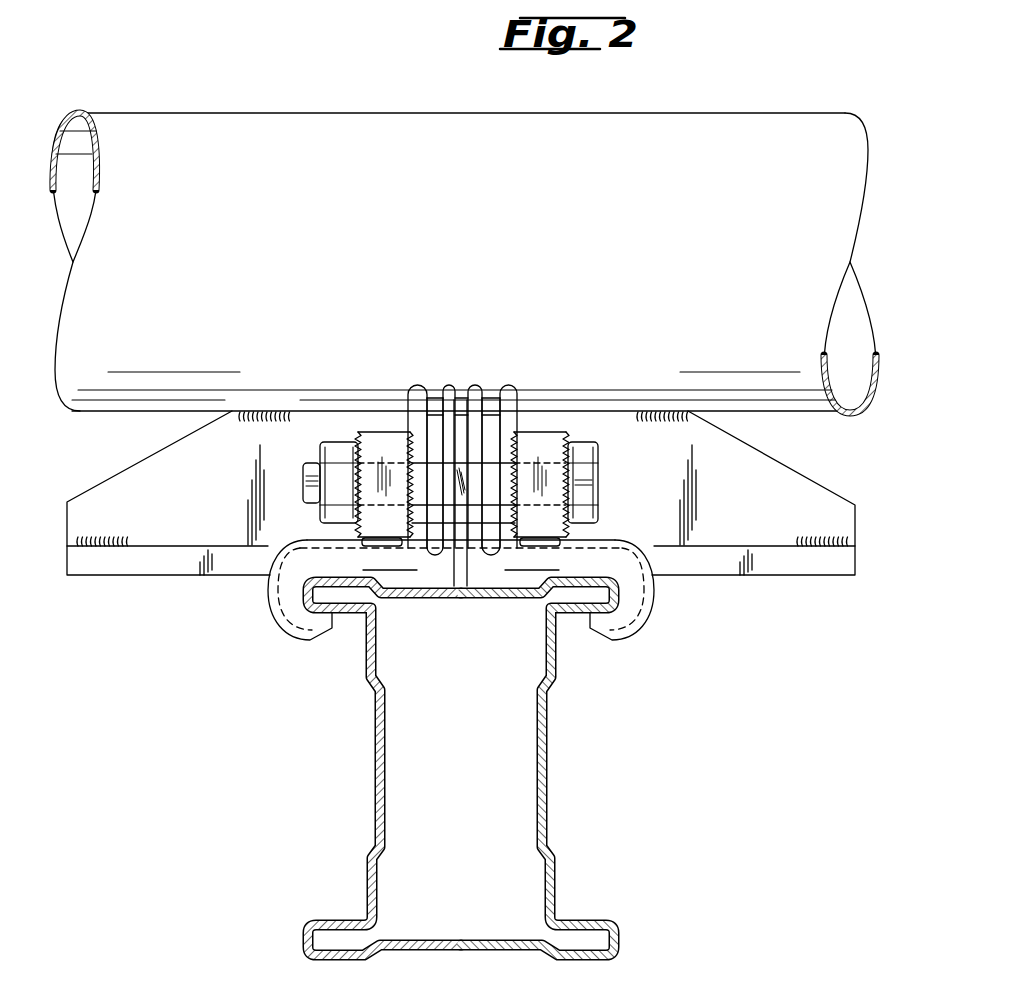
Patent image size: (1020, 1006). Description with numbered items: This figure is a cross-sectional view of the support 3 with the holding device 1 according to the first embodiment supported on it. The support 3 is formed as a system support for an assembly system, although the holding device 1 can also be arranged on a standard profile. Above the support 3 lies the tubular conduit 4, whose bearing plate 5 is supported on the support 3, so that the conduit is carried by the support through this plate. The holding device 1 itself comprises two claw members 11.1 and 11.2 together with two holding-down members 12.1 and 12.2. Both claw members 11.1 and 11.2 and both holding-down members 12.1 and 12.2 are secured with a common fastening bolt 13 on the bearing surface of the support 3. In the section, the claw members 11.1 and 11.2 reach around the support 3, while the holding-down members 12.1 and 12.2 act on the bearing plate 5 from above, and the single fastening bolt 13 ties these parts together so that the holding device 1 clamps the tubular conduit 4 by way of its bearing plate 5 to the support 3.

The holding device 1 is at (391, 358).
The support 3 is at (553, 795).
The tubular conduit 4 is at (706, 138).
The bearing plate 5 is at (690, 565).
The claw member 11.1 is at (505, 390).
The claw member 11.2 is at (417, 390).
The holding-down member 12.1 is at (549, 450).
The holding-down member 12.2 is at (373, 441).
The fastening bolt 13 is at (585, 452).